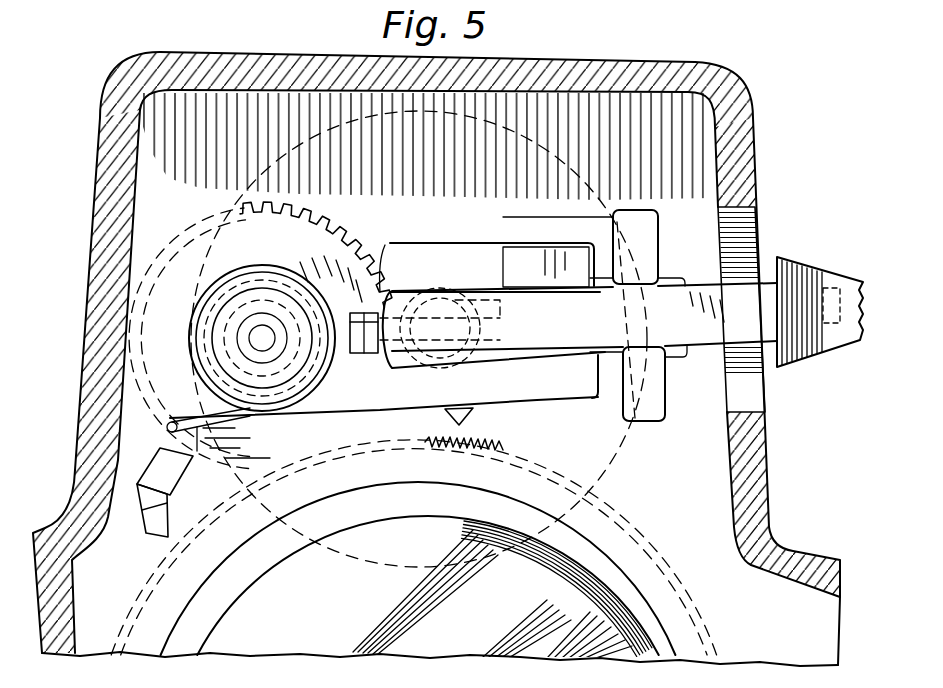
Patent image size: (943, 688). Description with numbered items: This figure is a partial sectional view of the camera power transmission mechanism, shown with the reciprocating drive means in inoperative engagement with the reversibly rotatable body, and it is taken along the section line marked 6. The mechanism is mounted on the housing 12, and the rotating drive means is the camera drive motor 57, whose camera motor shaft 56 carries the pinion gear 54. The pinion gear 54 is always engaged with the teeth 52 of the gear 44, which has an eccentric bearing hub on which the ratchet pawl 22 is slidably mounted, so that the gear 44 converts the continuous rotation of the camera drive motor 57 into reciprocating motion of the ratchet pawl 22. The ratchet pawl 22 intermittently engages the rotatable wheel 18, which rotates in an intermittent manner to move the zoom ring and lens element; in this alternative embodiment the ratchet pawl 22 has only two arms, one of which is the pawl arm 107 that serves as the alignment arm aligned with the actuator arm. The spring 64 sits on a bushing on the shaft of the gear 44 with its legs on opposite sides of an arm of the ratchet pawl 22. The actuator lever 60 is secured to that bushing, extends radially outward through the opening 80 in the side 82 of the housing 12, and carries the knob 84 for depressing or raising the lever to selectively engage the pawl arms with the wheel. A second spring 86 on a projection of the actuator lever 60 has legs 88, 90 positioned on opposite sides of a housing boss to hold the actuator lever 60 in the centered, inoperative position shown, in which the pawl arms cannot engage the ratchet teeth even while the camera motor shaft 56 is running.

The housing 12 is at (773, 529).
The side 82 is at (770, 442).
The opening 80 is at (762, 250).
The section line 6- 6 is at (873, 224).
The camera drive motor 57 is at (622, 457).
The leg 88 is at (547, 400).
The spring 64 is at (270, 276).
The gear 44 is at (318, 242).
The teeth 52 is at (322, 217).
The actuator lever 60 is at (700, 322).
The pinion gear 54 is at (500, 322).
The camera motor shaft 56 is at (418, 264).
The second spring 86 is at (577, 400).
The leg 90 is at (558, 285).
The knob 84 is at (832, 335).
The rotatable wheel 18 is at (502, 473).
The ratchet pawl 22 is at (170, 450).
The pawl arm 107 is at (137, 510).